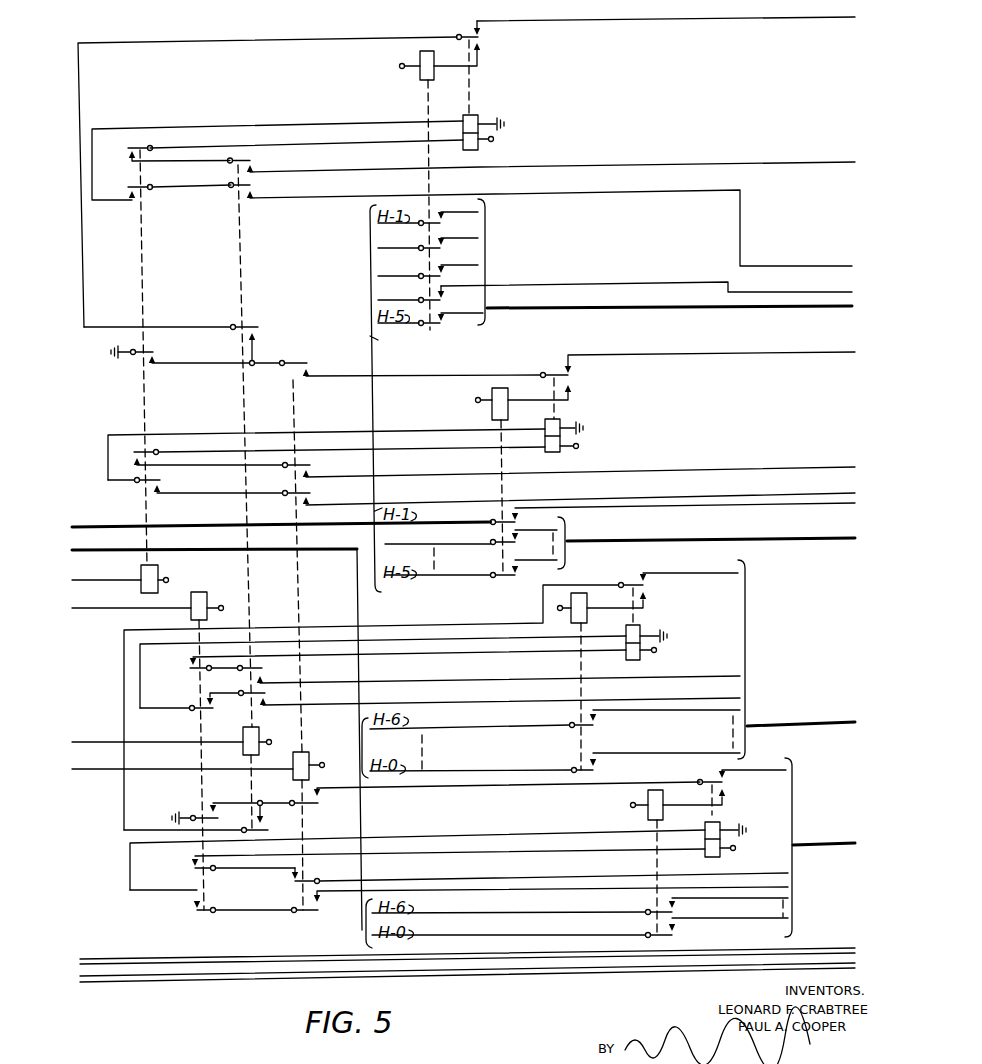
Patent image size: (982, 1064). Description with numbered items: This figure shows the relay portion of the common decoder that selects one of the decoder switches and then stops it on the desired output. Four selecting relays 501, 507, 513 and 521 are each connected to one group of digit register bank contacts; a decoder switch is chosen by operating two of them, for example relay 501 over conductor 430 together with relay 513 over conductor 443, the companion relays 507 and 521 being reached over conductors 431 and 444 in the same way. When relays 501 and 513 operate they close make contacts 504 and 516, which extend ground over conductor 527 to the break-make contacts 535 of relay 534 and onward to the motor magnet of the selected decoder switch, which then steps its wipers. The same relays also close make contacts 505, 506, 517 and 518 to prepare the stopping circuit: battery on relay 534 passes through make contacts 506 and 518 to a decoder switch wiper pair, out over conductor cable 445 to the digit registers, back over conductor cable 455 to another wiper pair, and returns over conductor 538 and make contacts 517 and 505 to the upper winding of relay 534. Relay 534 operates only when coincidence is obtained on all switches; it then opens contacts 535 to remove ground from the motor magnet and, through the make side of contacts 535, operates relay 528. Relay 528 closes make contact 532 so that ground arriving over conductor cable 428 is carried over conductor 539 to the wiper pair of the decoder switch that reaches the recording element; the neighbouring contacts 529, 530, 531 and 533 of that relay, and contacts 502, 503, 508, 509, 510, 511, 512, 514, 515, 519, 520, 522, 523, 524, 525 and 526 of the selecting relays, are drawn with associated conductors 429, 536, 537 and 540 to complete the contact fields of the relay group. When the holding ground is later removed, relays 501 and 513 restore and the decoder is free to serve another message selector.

The conductor cable 428 is at (124, 524).
The conductor 429 is at (124, 548).
The conductor 430 is at (122, 581).
The conductor 431 is at (120, 608).
The conductor 443 is at (122, 742).
The conductor 444 is at (124, 768).
The conductor cable 445 is at (161, 959).
The conductor cable 455 is at (196, 982).
The relay 501 is at (159, 568).
The relay contact 502 is at (160, 489).
The relay contact 503 is at (131, 461).
The make contact 504 is at (157, 357).
The make contact 505 is at (128, 190).
The make contact 506 is at (128, 150).
The relay 507 is at (202, 592).
The relay contact 508 is at (189, 665).
The relay contact 509 is at (205, 701).
The relay contact 510 is at (205, 809).
The relay contact 511 is at (190, 868).
The relay contact 512 is at (188, 909).
The relay 513 is at (254, 728).
The relay contact 514 is at (492, 698).
The relay contact 515 is at (489, 673).
The make contact 516 is at (256, 334).
The make contact 517 is at (256, 191).
The make contact 518 is at (256, 166).
The relay contact 519 is at (211, 819).
The relay contact 520 is at (290, 878).
The relay 521 is at (306, 753).
The relay contact 522 is at (310, 498).
The relay contact 523 is at (310, 469).
The relay contact 524 is at (309, 370).
The relay contact 525 is at (323, 798).
The relay contact 526 is at (540, 908).
The conductor 527 is at (160, 326).
The relay 528 is at (420, 80).
The relay contact 529 is at (429, 223).
The relay contact 530 is at (429, 248).
The relay contact 531 is at (429, 273).
The make contact 532 is at (429, 297).
The relay contact 533 is at (448, 320).
The relay 534 is at (472, 115).
The break-make contacts 535 is at (486, 42).
The conductor 536 is at (818, 16).
The conductor 537 is at (819, 162).
The conductor 538 is at (840, 265).
The conductor 539 is at (842, 290).
The conductor 540 is at (836, 308).